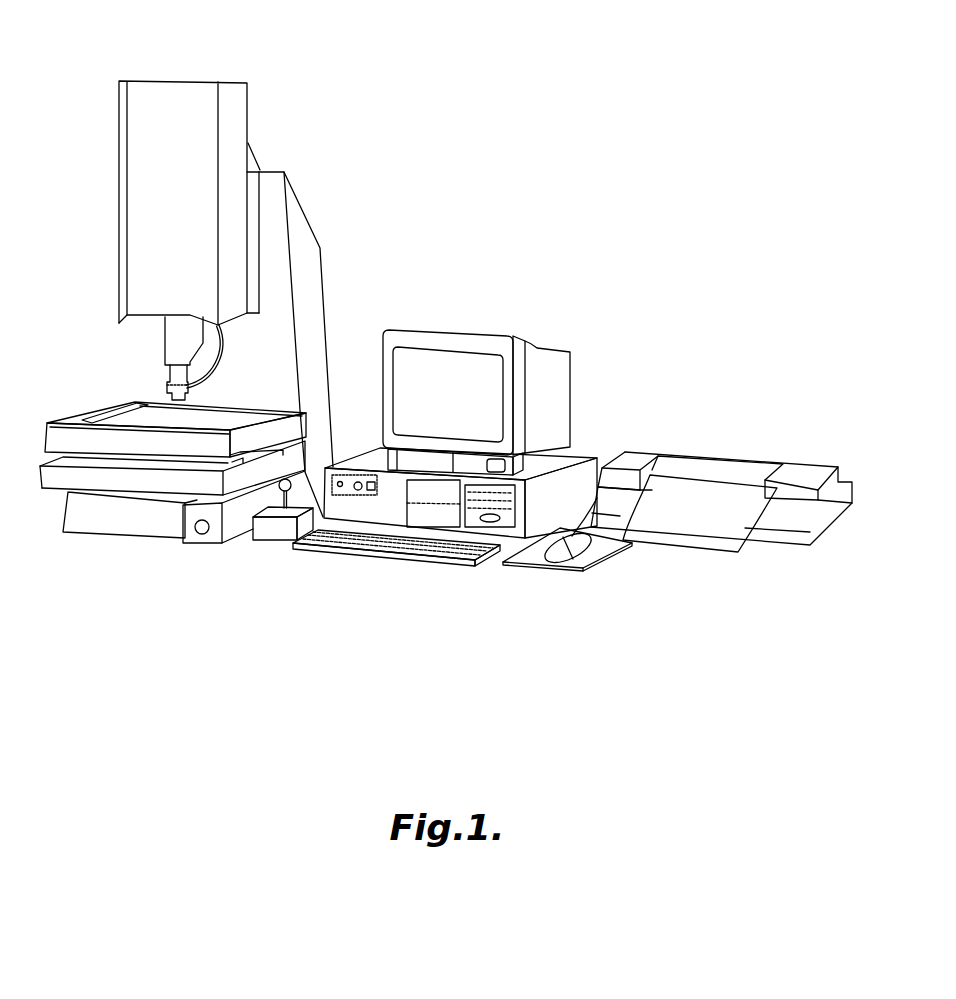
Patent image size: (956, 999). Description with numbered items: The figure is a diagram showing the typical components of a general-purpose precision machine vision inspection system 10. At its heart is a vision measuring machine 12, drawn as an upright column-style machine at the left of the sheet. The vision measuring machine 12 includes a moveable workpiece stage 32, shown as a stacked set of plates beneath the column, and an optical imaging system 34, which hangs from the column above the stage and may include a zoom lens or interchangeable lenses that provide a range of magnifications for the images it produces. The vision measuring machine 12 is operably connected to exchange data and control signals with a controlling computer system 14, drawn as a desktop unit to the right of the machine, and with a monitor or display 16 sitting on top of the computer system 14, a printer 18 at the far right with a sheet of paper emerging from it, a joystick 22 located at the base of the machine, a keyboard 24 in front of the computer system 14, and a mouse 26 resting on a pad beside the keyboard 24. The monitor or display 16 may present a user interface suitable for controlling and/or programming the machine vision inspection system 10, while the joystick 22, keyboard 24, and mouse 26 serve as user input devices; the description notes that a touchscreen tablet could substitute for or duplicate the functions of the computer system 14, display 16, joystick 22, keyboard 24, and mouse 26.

The machine vision inspection system 10 is at (576, 140).
The vision measuring machine 12 is at (173, 80).
The controlling computer system 14 is at (573, 453).
The monitor or display 16 is at (460, 330).
The printer 18 is at (730, 458).
The joystick 22 is at (272, 545).
The keyboard 24 is at (380, 555).
The mouse 26 is at (576, 551).
The moveable workpiece stage 32 is at (92, 410).
The optical imaging system 34 is at (167, 320).